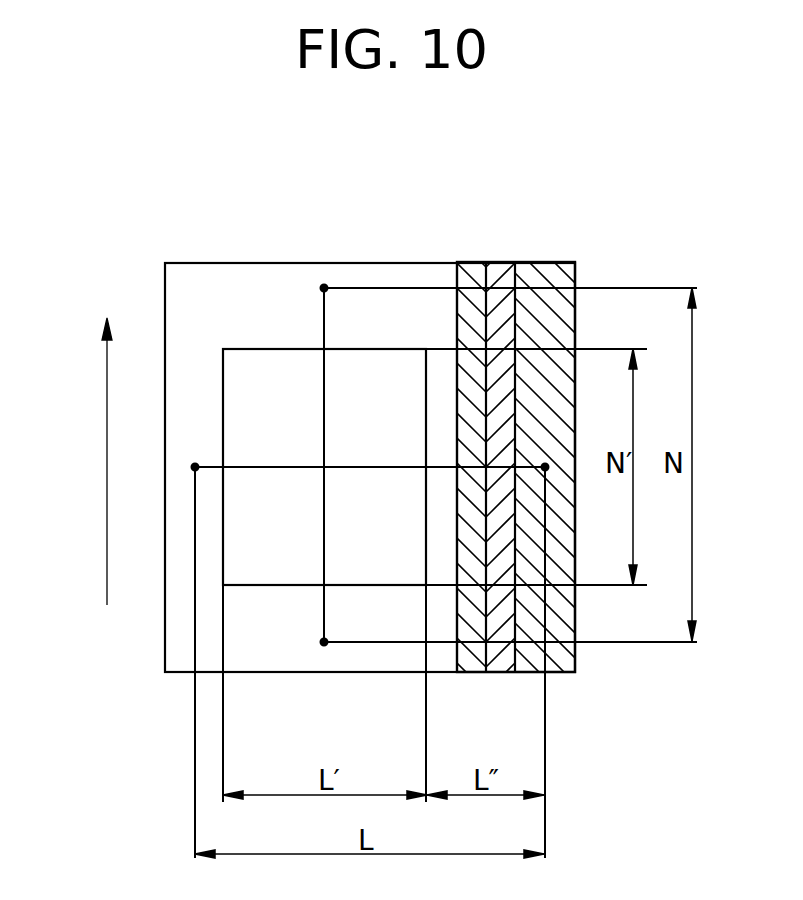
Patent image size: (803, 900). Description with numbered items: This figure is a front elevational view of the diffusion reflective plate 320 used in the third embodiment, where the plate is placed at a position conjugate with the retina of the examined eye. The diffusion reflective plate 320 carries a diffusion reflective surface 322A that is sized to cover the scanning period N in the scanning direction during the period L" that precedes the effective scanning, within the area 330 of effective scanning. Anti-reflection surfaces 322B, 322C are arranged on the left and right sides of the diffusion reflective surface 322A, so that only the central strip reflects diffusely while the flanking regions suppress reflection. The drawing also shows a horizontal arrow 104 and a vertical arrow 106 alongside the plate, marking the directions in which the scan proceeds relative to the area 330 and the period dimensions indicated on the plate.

The first scanning direction 104 is at (223, 203).
The second scanning direction 106 is at (107, 538).
The diffusion reflective plate 320 is at (558, 443).
The diffusion reflective surface 322A is at (502, 262).
The anti-reflection surface 322B is at (563, 308).
The anti-reflection surface 322C is at (470, 262).
The area of effective scanning 330 is at (220, 356).